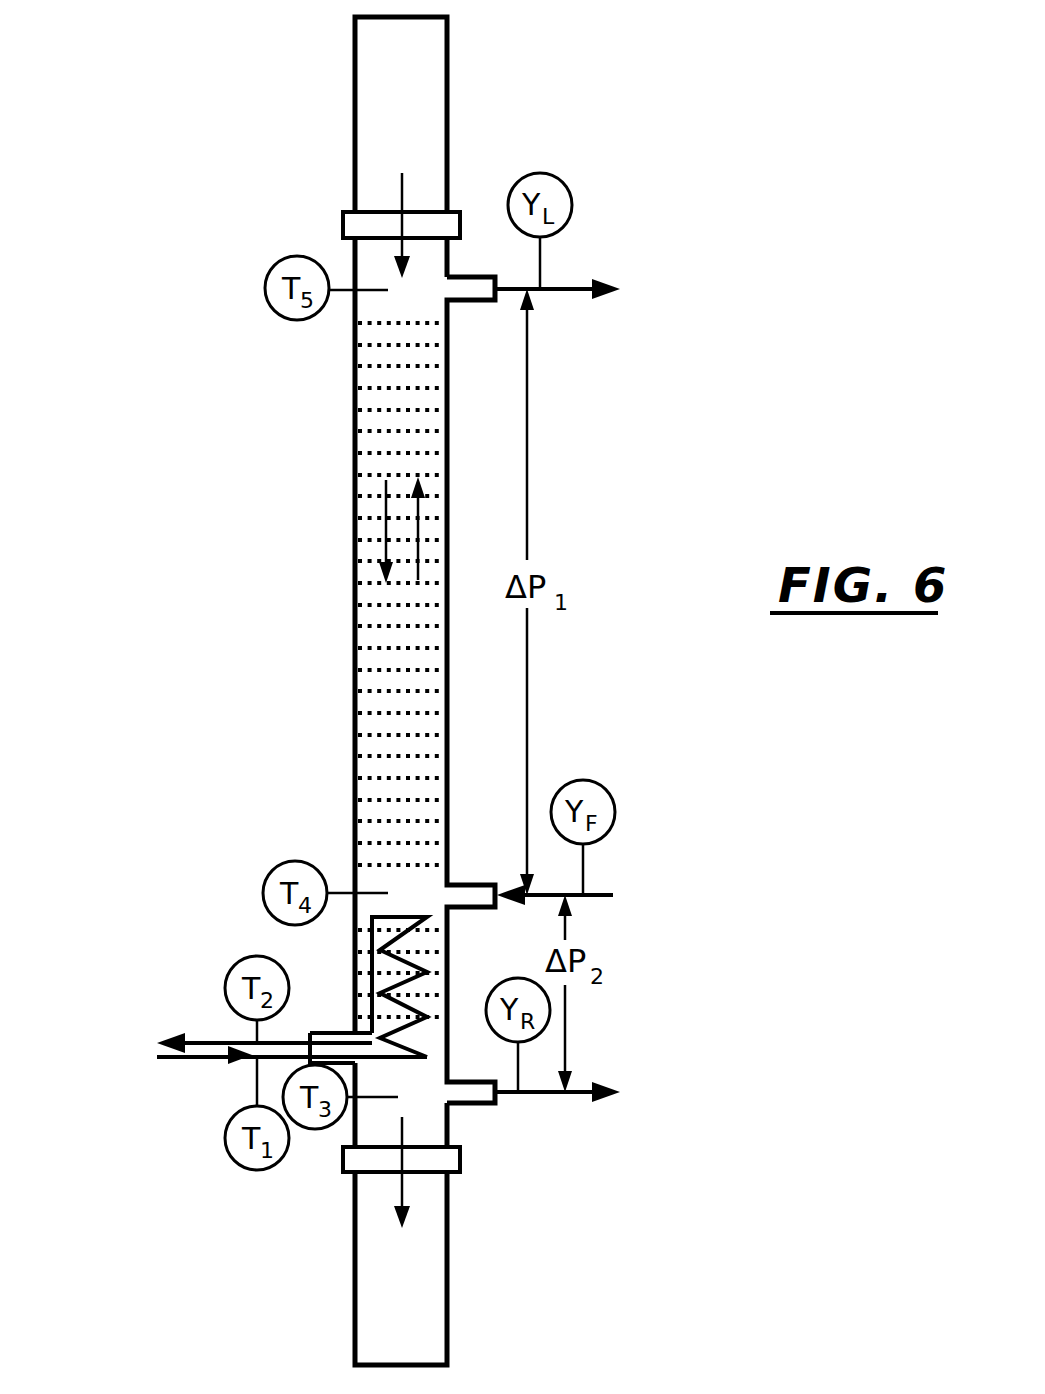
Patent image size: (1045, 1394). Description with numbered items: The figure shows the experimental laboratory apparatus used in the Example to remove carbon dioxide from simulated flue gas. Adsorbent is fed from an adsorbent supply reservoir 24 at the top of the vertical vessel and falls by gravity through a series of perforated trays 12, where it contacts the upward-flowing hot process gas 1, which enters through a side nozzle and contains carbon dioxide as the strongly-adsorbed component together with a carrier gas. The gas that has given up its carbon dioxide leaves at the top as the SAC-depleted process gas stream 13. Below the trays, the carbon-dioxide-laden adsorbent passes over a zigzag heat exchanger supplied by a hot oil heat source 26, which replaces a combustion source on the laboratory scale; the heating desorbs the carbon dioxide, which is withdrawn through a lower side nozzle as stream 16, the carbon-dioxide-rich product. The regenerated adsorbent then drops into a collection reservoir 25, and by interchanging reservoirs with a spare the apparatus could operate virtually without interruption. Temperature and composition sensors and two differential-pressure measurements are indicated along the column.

The hot process gas 1 is at (600, 899).
The perforated trays 12 is at (373, 430).
The SAC-depleted process gas stream 13 is at (560, 292).
The desorbed SAC stream 16 is at (573, 1096).
The adsorbent supply reservoir 24 is at (450, 91).
The collection reservoir 25 is at (450, 1263).
The hot oil heat source 26 is at (140, 1045).